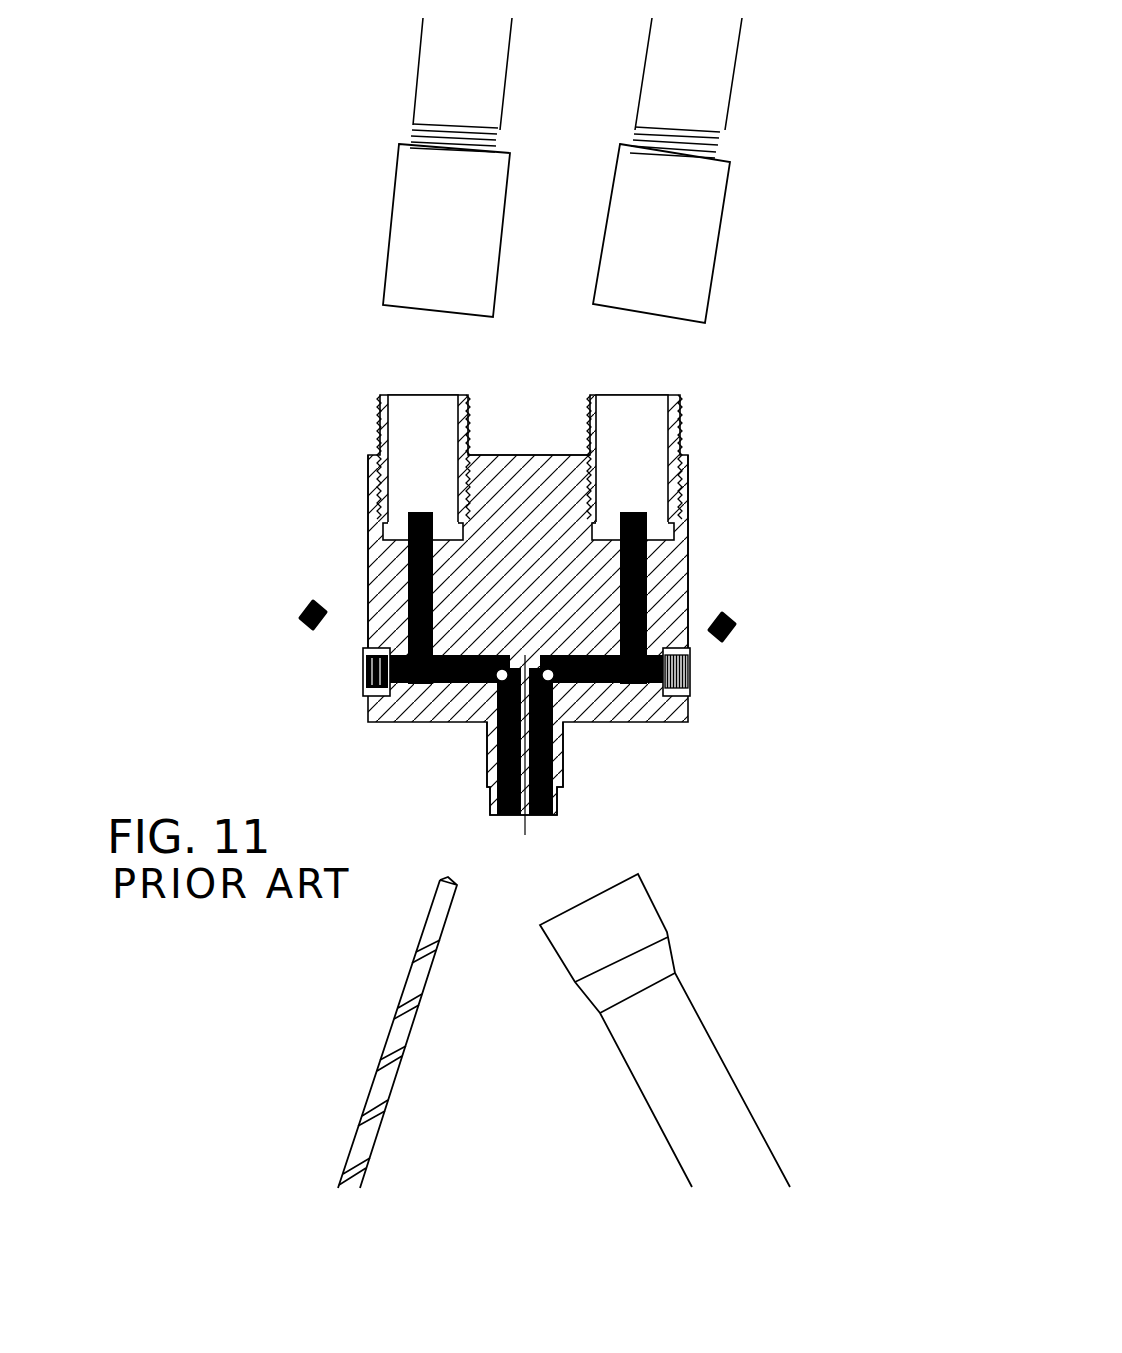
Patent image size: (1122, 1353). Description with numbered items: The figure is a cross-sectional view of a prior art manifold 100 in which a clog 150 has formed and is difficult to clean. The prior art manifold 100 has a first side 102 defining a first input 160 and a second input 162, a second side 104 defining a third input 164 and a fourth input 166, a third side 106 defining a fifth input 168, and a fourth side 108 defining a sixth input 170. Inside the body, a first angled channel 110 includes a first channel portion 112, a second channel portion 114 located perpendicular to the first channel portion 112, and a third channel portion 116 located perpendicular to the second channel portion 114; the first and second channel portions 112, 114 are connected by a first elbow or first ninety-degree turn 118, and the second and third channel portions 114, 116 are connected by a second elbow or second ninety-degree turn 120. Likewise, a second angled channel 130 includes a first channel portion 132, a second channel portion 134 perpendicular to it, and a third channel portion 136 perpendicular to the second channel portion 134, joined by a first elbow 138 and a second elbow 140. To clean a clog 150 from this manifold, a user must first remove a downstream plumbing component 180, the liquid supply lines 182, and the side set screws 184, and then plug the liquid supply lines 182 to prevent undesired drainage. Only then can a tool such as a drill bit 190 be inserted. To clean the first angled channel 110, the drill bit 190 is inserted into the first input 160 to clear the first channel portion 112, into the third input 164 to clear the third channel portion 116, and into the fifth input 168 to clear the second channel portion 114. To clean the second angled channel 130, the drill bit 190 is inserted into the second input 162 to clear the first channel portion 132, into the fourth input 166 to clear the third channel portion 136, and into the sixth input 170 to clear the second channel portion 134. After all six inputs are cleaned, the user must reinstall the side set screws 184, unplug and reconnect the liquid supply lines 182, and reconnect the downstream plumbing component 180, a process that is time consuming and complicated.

The prior art manifold 100 is at (765, 547).
The first side 102 is at (523, 455).
The second side 104 is at (585, 727).
The third side 106 is at (368, 555).
The fourth side 108 is at (687, 590).
The first angled channel 110 is at (439, 453).
The first channel portion 112 is at (407, 590).
The second channel portion 114 is at (413, 683).
The third channel portion 116 is at (497, 770).
The first elbow 118 is at (400, 692).
The second elbow 120 is at (495, 682).
The second angled channel 130 is at (650, 454).
The first channel portion 132 is at (650, 567).
The second channel portion 134 is at (558, 684).
The third channel portion 136 is at (553, 790).
The first elbow 138 is at (652, 640).
The second elbow 140 is at (554, 682).
The clog 150 is at (415, 512).
The first input 160 is at (423, 410).
The second input 162 is at (641, 414).
The third input 164 is at (510, 844).
The fourth input 166 is at (551, 844).
The fifth input 168 is at (313, 685).
The sixth input 170 is at (716, 681).
The downstream plumbing component 180 is at (688, 1027).
The liquid supply lines 182 is at (435, 77).
The side set screws 184 is at (302, 628).
The drill bit 190 is at (388, 1032).